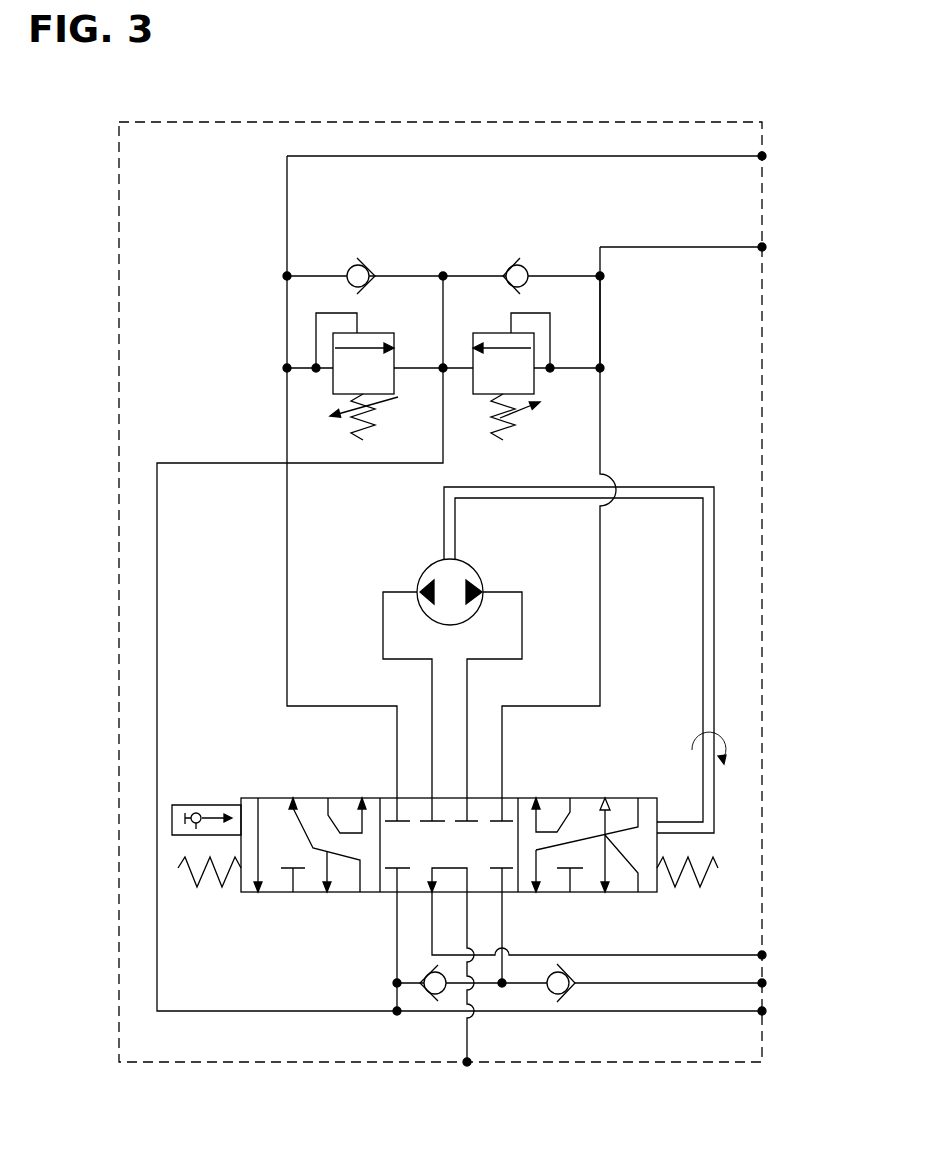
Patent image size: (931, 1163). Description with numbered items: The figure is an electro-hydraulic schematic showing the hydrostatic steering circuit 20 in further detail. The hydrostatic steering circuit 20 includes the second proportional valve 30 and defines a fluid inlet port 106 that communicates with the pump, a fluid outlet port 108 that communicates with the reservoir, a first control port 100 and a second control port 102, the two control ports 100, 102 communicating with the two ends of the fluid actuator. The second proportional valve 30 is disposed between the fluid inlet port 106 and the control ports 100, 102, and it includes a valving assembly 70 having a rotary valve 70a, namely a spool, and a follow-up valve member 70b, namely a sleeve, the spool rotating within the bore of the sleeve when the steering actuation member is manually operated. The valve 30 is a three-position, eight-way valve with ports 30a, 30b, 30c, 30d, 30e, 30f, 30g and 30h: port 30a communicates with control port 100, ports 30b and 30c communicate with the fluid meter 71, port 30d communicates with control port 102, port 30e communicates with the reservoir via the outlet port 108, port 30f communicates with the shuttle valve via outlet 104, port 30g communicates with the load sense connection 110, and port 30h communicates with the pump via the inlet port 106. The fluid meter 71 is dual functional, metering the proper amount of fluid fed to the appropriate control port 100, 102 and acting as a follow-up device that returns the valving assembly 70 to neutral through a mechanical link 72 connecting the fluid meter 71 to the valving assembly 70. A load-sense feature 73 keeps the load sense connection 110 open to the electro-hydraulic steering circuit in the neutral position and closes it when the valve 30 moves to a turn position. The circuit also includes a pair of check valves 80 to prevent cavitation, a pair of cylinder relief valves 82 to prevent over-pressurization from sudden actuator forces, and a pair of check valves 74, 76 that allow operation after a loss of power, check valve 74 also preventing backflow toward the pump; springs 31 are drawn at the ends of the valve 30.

The hydrostatic steering circuit 20 is at (178, 121).
The first control port 100 is at (764, 153).
The second control port 102 is at (764, 245).
The outlet 104 is at (764, 953).
The fluid inlet port 106 is at (764, 981).
The fluid outlet port 108 is at (764, 1009).
The load sense connection 110 is at (467, 1063).
The check valves 80 is at (350, 266).
The cylinder relief valves 82 is at (396, 393).
The mechanical link 72 is at (700, 487).
The fluid meter 71 is at (425, 571).
The valving assembly 70 is at (444, 831).
The rotary valve 70a is at (347, 795).
The follow-up valve member 70b is at (277, 795).
The second proportional valve 30 is at (652, 796).
The port 30a is at (397, 797).
The port 30b is at (432, 797).
The port 30c is at (467, 797).
The port 30d is at (502, 797).
The port 30e is at (397, 895).
The port 30f is at (432, 895).
The port 30g is at (502, 895).
The port 30h is at (467, 895).
The spring 31 is at (203, 880).
The load-sense feature 73 is at (452, 876).
The check valve 74 is at (549, 996).
The check valve 76 is at (427, 996).